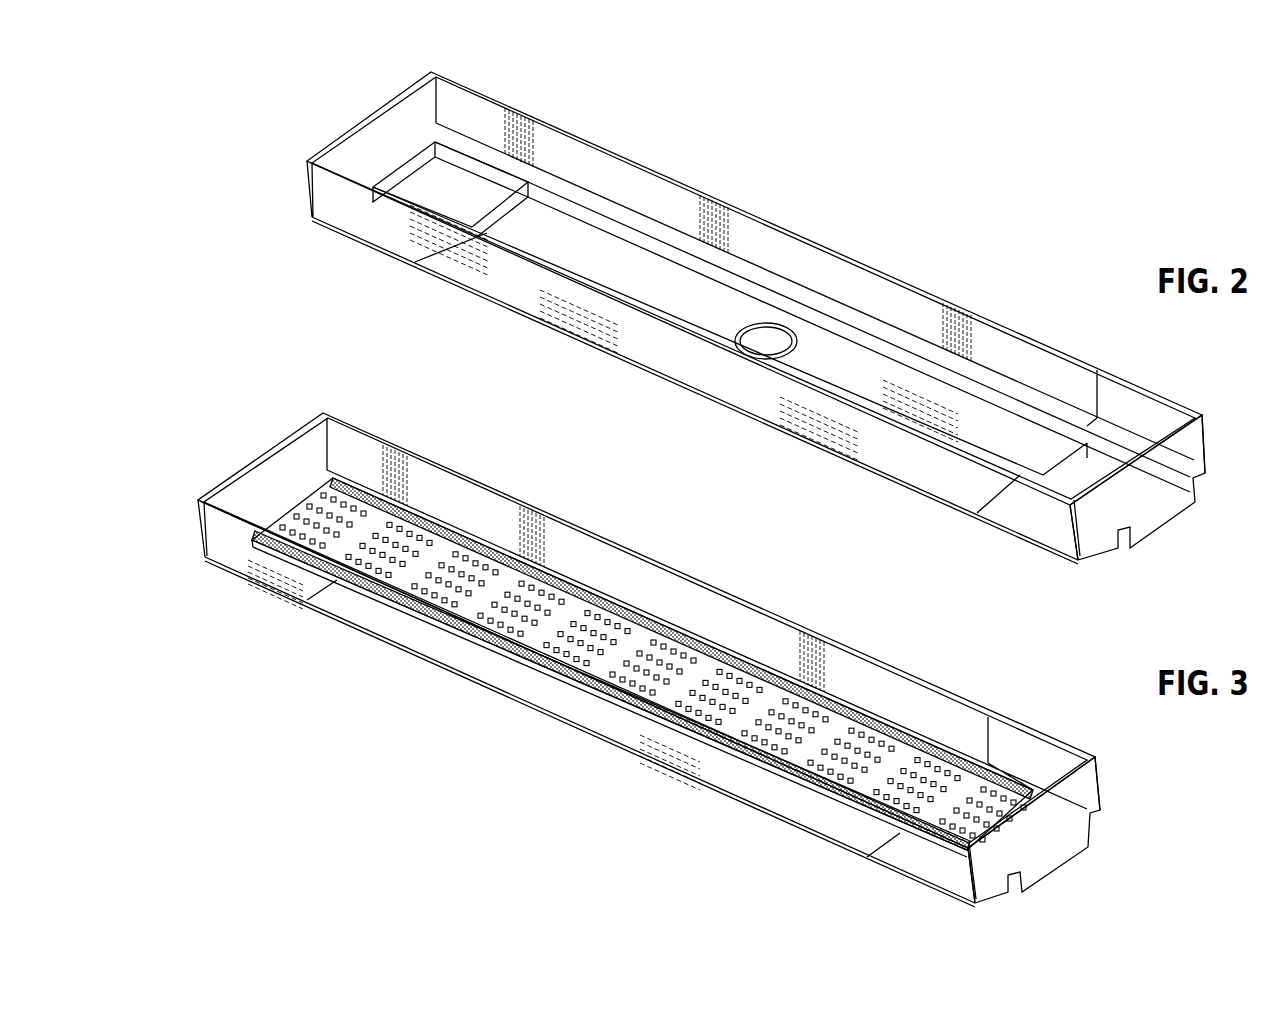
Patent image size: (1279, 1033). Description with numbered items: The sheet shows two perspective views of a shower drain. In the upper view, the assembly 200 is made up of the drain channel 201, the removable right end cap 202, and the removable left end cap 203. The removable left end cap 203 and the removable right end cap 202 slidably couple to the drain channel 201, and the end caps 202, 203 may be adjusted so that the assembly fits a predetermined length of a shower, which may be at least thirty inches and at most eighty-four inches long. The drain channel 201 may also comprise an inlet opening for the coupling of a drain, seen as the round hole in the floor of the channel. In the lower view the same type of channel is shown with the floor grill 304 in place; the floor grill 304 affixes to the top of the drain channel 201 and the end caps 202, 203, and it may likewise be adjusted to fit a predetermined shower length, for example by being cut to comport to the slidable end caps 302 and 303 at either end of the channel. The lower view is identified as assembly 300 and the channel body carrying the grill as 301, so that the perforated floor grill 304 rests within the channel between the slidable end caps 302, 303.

In FIG. 2, the assembly 200 is at (828, 138).
In FIG. 2, the drain channel 201 is at (675, 362).
In FIG. 2, the removable right end cap 202 is at (380, 238).
In FIG. 2, the removable left end cap 203 is at (1033, 518).
In FIG. 3, the tray assembly 300 is at (163, 440).
In FIG. 3, the perforated insert plate 301 is at (617, 720).
In FIG. 3, the slidable end cap 302 is at (235, 552).
In FIG. 3, the slidable end cap 303 is at (935, 863).
In FIG. 3, the floor grill 304 is at (455, 600).